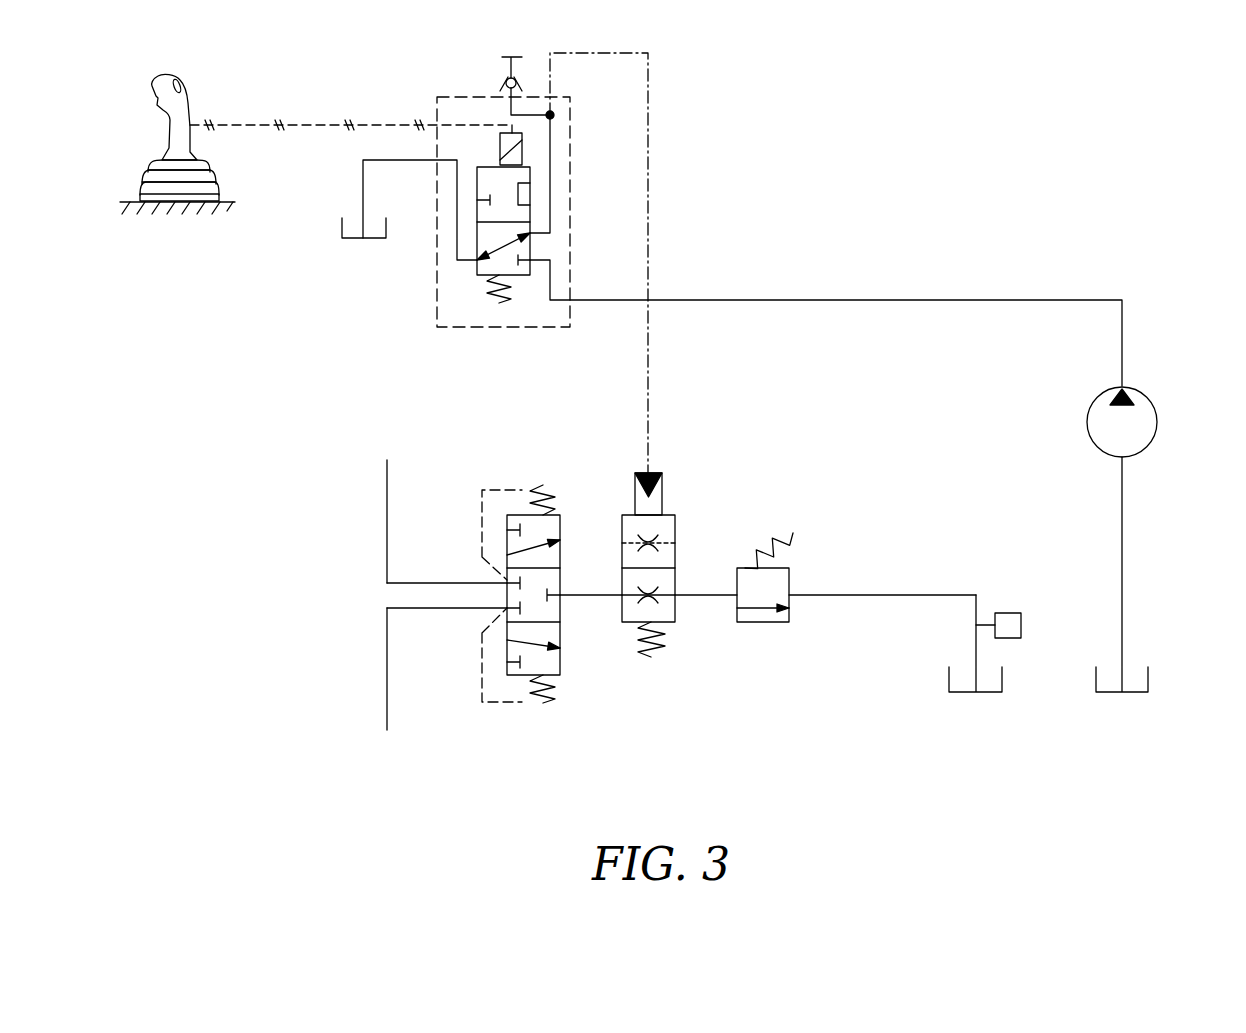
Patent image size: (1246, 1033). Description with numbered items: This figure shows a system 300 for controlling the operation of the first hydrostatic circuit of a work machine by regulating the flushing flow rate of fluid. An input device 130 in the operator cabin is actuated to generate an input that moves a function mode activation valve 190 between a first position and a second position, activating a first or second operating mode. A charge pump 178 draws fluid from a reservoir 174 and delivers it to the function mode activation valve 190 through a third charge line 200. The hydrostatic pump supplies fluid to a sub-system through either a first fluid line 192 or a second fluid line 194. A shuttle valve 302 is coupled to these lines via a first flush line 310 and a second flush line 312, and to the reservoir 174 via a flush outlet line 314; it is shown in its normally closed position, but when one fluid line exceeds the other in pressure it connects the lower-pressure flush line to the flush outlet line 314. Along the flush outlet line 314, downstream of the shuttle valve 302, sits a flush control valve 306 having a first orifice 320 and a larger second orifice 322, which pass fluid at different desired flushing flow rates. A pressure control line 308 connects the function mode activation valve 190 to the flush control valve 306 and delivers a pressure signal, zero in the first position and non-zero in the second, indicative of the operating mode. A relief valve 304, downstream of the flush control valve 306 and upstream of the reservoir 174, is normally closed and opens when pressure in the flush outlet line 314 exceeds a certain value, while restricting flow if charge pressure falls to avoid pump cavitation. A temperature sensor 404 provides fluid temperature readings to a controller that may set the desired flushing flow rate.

The input device 130 is at (192, 91).
The reservoir 174 is at (342, 226).
The charge pump 178 is at (1147, 447).
The function mode activation valve 190 is at (436, 256).
The first fluid line 192 is at (387, 475).
The second fluid line 194 is at (387, 712).
The third charge line 200 is at (958, 300).
The system 300 is at (760, 437).
The shuttle valve 302 is at (569, 524).
The relief valve 304 is at (796, 571).
The flush control valve 306 is at (731, 566).
The pressure control line 308 is at (650, 213).
The first flush line 310 is at (425, 582).
The second flush line 312 is at (430, 608).
The flush outlet line 314 is at (578, 597).
The first orifice 320 is at (650, 600).
The second orifice 322 is at (660, 562).
The temperature sensor 404 is at (1021, 627).